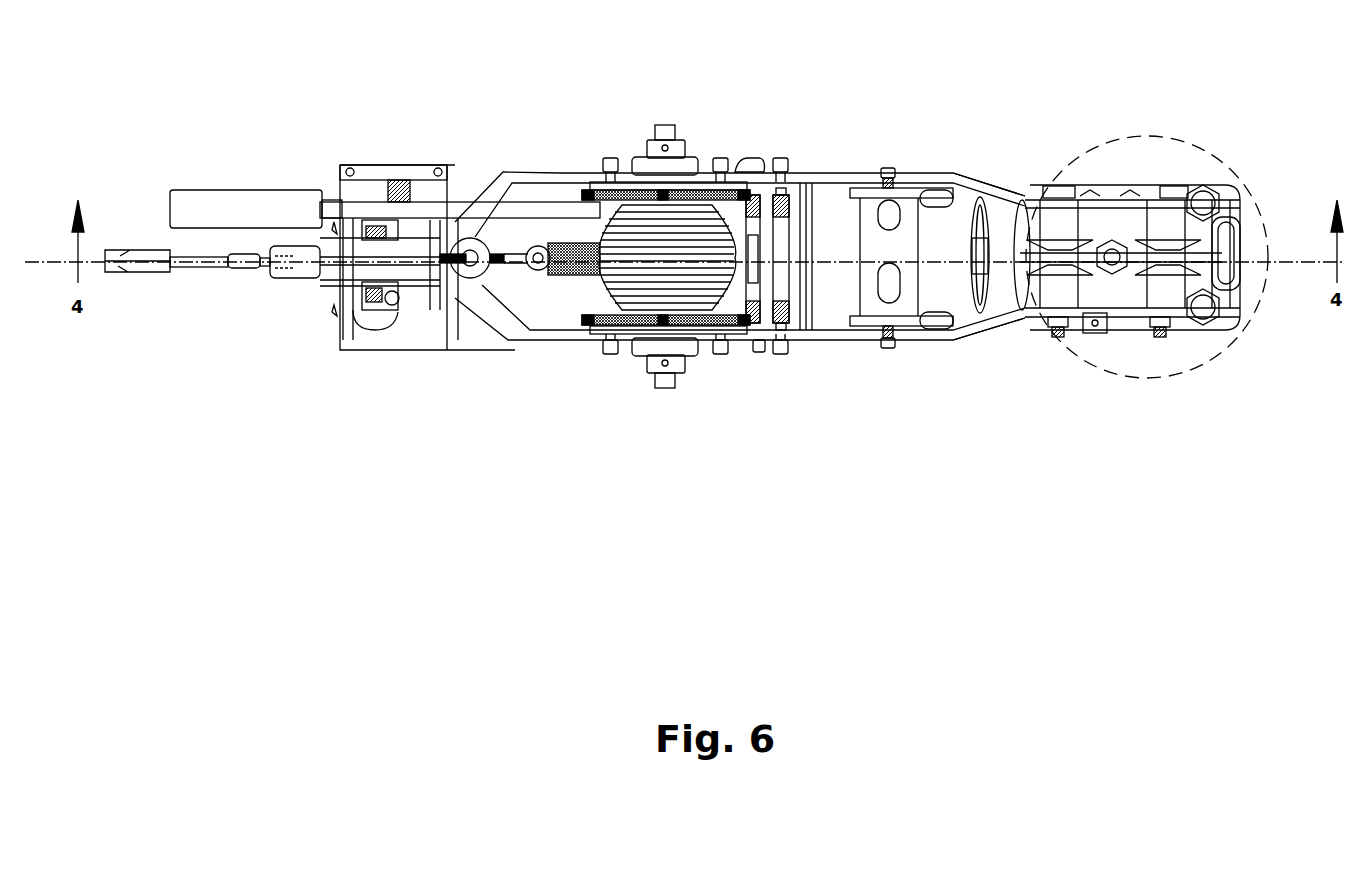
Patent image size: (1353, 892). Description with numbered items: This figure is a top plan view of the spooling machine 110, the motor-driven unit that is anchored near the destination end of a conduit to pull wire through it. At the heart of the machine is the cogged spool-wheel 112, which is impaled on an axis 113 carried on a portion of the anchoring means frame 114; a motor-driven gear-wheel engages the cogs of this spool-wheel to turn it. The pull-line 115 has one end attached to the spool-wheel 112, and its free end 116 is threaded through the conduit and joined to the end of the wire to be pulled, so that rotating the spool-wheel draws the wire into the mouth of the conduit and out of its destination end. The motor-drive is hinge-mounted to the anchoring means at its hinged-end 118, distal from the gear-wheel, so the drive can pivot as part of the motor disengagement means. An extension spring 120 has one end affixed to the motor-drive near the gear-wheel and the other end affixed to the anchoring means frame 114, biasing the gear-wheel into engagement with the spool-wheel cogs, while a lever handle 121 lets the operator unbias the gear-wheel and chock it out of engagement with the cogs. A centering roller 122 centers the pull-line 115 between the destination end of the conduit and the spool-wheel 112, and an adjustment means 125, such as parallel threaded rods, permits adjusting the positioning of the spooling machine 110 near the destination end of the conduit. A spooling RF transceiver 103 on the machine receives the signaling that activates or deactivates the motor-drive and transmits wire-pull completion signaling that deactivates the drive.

The spooling machine 110 is at (402, 96).
The spooling RF transceiver 103 is at (372, 190).
The cogged spool-wheel 112 is at (583, 195).
The axis 113 is at (668, 387).
The anchoring means frame 114 is at (632, 340).
The pull-line 115 is at (830, 253).
The free end 116 is at (188, 263).
The hinged-end 118 is at (957, 223).
The extension spring 120 is at (565, 278).
The lever handle 121 is at (220, 203).
The centering roller 122 is at (1173, 243).
The adjustment means 125 is at (1207, 313).